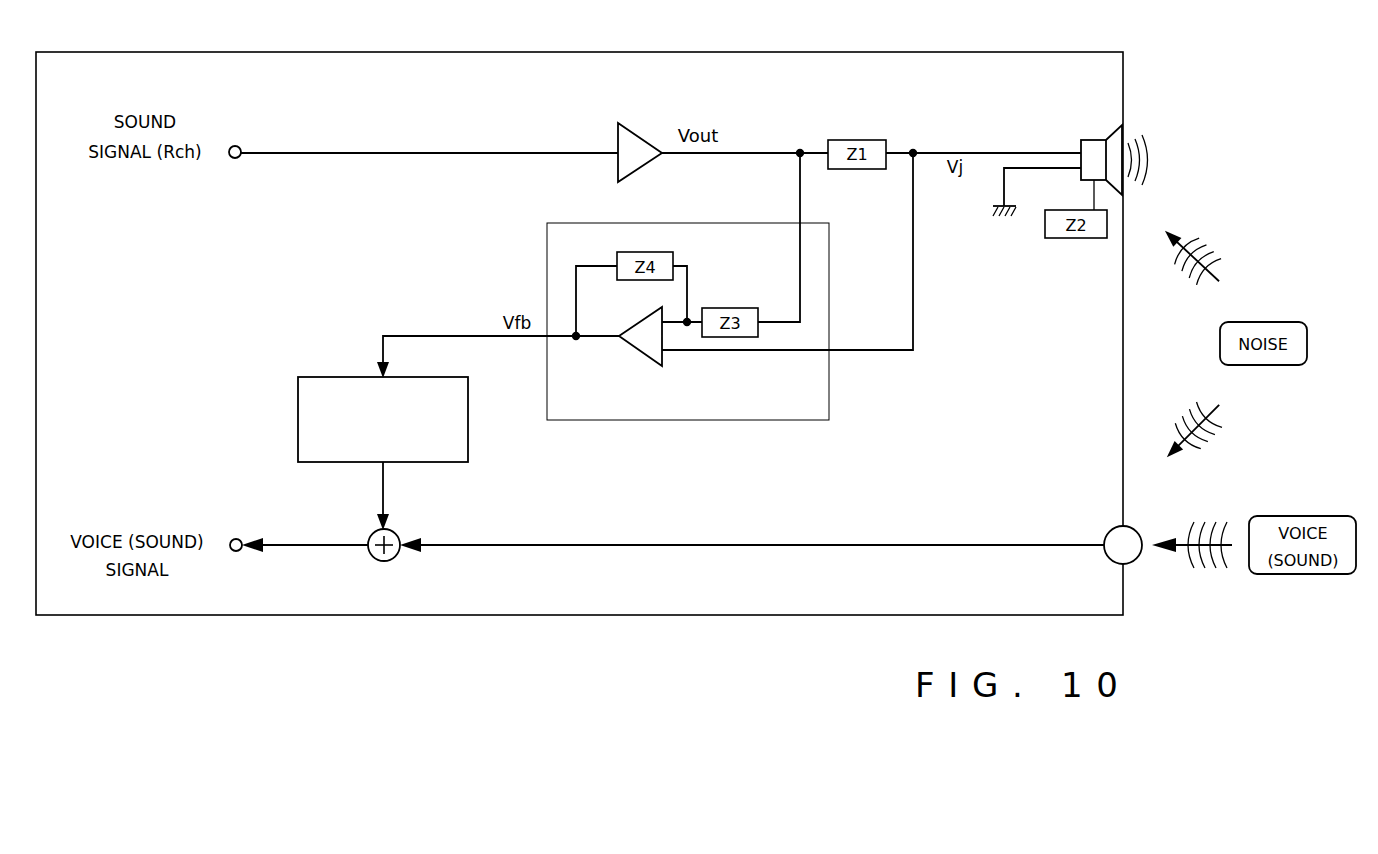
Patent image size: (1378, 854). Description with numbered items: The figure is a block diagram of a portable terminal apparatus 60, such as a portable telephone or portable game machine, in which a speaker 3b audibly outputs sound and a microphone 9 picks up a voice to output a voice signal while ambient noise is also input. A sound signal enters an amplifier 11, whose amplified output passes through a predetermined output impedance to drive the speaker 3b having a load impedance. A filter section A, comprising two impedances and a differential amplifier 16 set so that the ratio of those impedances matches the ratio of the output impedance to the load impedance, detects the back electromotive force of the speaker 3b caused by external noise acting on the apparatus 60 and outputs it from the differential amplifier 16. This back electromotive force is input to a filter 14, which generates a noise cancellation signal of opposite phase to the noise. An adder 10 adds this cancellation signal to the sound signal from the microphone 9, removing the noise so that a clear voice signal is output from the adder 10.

The portable terminal apparatus 60 is at (389, 51).
The amplifier 11 is at (620, 128).
The speaker 3b is at (1110, 134).
The filter 14 is at (427, 377).
The differential amplifier 16 is at (641, 356).
The adder 10 is at (374, 531).
The microphone 9 is at (1110, 526).
The filter section A is at (838, 380).